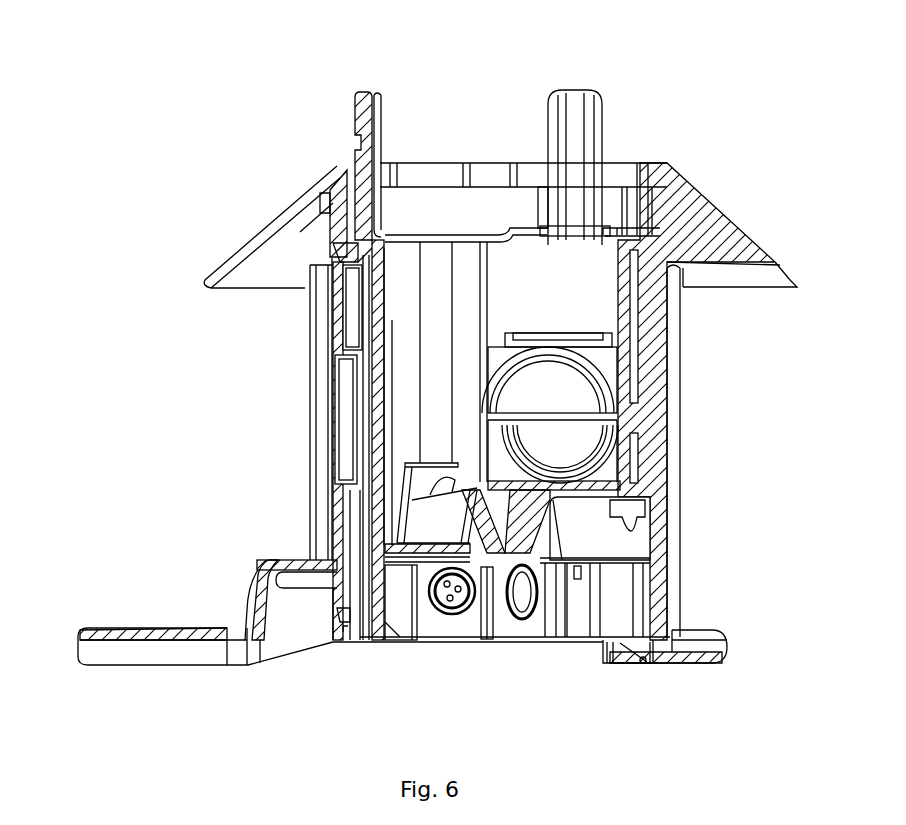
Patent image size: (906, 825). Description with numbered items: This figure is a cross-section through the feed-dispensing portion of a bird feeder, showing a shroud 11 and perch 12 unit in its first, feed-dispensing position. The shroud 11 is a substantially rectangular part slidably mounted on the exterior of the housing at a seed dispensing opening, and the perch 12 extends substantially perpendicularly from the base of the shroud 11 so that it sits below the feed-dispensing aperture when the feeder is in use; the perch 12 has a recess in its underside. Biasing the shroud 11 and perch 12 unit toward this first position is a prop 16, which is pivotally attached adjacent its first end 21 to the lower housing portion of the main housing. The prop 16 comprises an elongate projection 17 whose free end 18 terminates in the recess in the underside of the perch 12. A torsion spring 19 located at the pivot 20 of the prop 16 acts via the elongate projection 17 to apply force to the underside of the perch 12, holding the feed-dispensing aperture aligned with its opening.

The shroud 11 is at (310, 302).
The perch 12 is at (130, 650).
The prop 16 is at (387, 647).
The elongate projection 17 is at (303, 580).
The free end 18 is at (267, 580).
The torsion spring 19 is at (443, 612).
The pivot 20 is at (480, 593).
The first end 21 is at (521, 632).